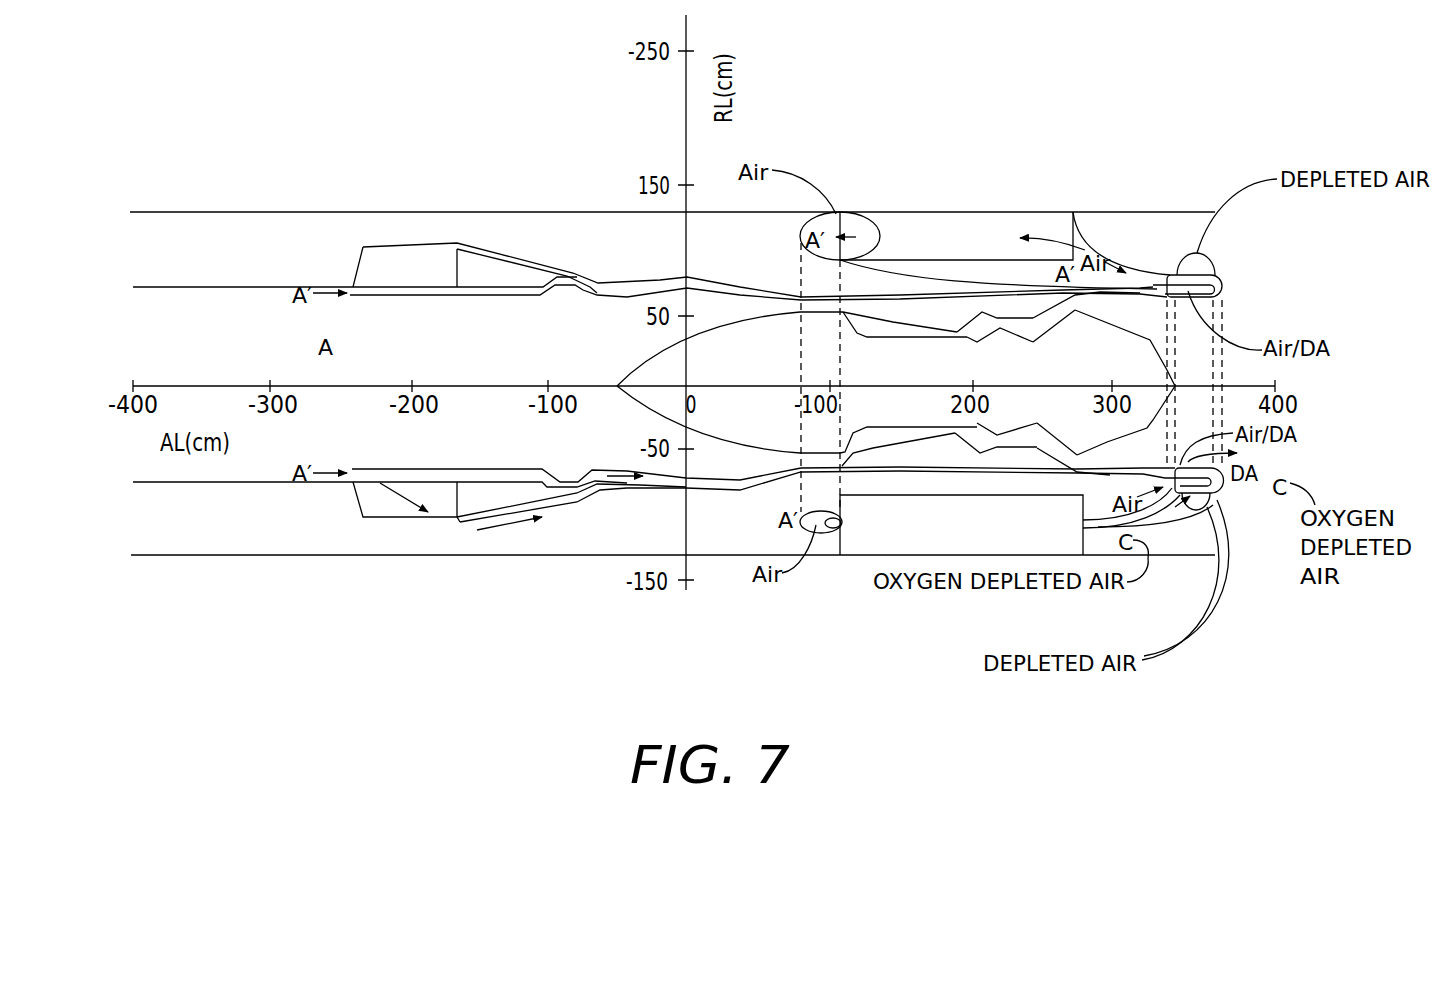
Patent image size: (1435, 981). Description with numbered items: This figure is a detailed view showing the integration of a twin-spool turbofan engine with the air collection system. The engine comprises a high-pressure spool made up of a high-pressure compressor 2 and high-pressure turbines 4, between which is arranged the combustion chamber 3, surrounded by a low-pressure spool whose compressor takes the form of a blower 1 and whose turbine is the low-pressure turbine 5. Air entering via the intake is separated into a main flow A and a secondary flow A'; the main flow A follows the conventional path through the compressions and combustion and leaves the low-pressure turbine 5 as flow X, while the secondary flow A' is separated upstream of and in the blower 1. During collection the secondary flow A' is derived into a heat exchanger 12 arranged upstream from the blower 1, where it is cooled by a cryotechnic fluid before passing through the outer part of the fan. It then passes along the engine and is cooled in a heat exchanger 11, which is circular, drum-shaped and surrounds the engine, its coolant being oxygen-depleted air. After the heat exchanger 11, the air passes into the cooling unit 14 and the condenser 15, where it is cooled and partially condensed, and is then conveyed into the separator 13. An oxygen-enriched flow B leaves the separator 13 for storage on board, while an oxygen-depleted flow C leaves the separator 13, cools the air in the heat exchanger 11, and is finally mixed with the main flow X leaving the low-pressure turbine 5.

The blower 1 is at (730, 375).
The high-pressure compressor 2 is at (908, 389).
The combustion chamber 3 is at (996, 382).
The high-pressure turbines 4 is at (1083, 383).
The low-pressure turbine 5 is at (1125, 375).
The heat exchanger 11 is at (1195, 285).
The heat exchanger 12 is at (357, 600).
The separator 13 is at (961, 525).
The cooling unit 14 is at (1069, 188).
The condenser 15 is at (937, 220).